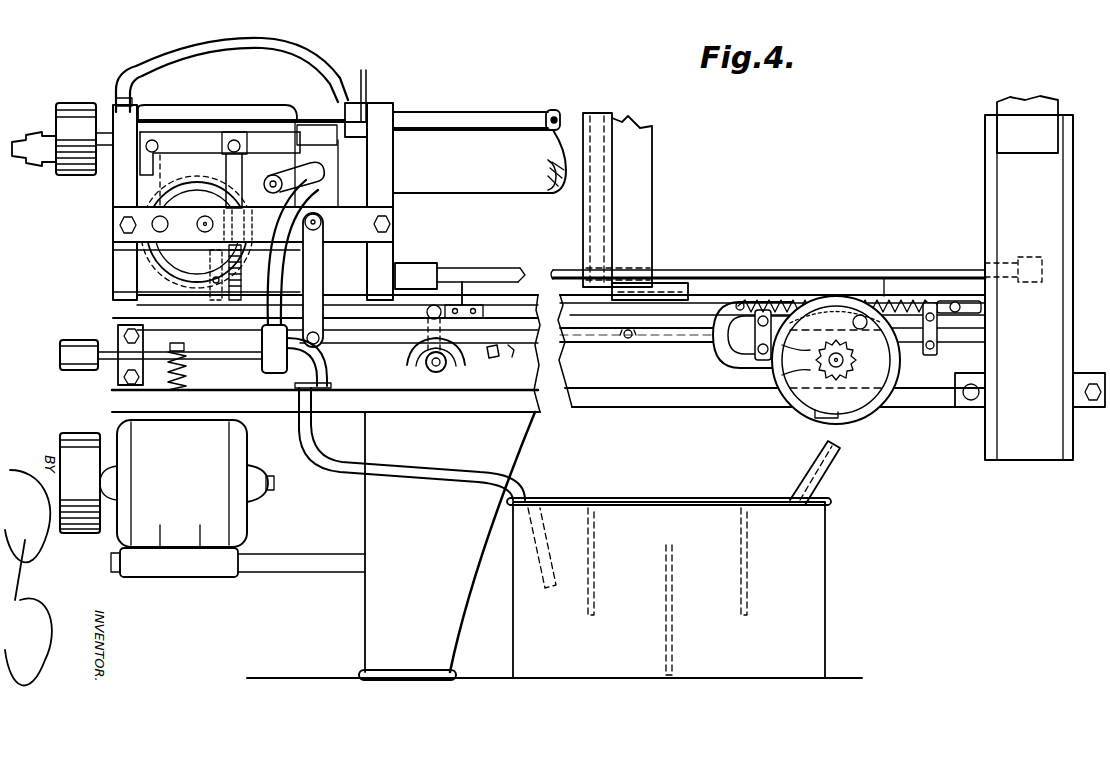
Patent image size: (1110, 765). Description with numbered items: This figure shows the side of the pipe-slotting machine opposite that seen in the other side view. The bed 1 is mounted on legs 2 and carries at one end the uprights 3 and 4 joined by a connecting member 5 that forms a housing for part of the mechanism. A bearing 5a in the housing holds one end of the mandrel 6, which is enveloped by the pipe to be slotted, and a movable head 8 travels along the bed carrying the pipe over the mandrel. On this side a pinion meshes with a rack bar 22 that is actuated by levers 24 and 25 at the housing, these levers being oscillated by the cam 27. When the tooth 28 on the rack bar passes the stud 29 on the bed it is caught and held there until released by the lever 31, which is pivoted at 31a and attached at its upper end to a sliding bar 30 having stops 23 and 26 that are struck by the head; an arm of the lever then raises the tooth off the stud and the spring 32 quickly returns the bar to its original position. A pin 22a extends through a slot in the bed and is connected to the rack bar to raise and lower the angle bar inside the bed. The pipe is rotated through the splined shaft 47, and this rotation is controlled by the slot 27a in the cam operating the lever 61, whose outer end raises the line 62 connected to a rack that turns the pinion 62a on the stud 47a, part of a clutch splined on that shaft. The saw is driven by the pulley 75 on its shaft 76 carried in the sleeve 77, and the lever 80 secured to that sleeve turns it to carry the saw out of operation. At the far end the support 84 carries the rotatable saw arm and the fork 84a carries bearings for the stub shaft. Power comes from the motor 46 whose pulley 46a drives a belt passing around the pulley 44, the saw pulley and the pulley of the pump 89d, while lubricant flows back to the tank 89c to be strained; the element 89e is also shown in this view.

The bed 1 is at (640, 403).
The legs 2 is at (364, 609).
The upright 3 is at (390, 255).
The upright 4 is at (112, 192).
The connecting member 5 is at (202, 68).
The bearing 5a is at (358, 195).
The mandrel 6 is at (493, 187).
The movable head 8 is at (652, 190).
The rack bar 22 is at (689, 338).
The pin 22a is at (626, 339).
The stop 23 is at (466, 276).
The lever 24 is at (325, 340).
The lever 25 is at (318, 200).
The stop 26 is at (887, 294).
The cam 27 is at (135, 262).
The slot 27a is at (180, 262).
The tooth 28 is at (499, 350).
The stud 29 is at (510, 358).
The sliding bar 30 is at (703, 292).
The lever 31 is at (452, 360).
The pivot 31a is at (428, 366).
The spring 32 is at (800, 300).
The pulley 44 is at (56, 163).
The motor 46 is at (241, 455).
The pulley 46a is at (92, 433).
The splined shaft 47 is at (562, 270).
The stud 47a is at (214, 284).
The lever 61 is at (160, 185).
The line 62 is at (240, 140).
The pinion 62a is at (236, 300).
The pulley 75 is at (57, 112).
The shaft 76 is at (313, 121).
The sleeve 77 is at (480, 119).
The lever 80 is at (366, 80).
The support 84 is at (1000, 205).
The fork 84a is at (1005, 132).
The tank 89c is at (645, 508).
The pump 89d is at (263, 366).
The valve knob 89e is at (60, 348).